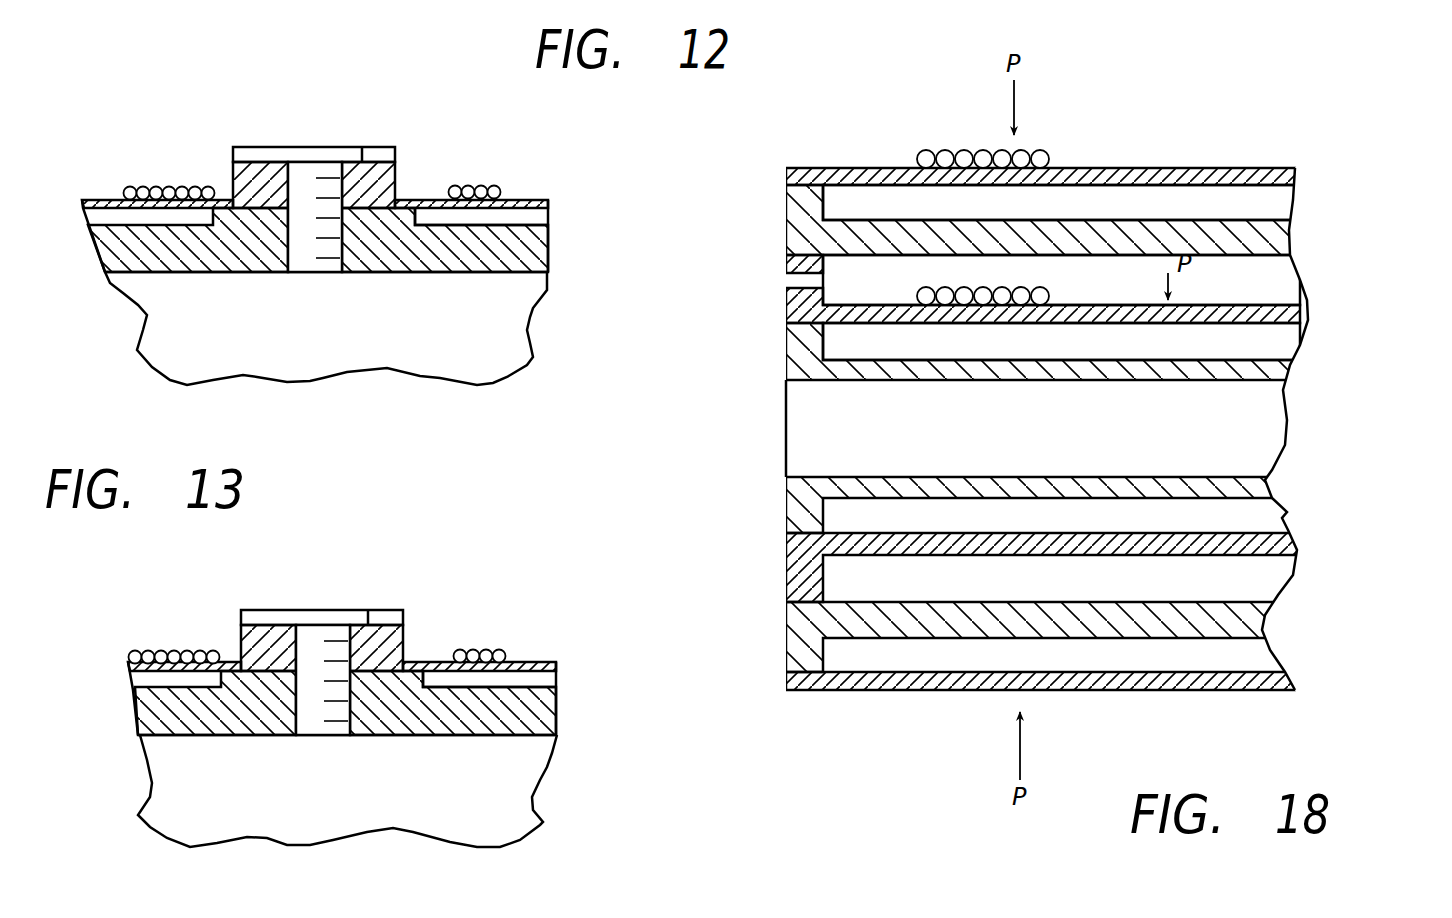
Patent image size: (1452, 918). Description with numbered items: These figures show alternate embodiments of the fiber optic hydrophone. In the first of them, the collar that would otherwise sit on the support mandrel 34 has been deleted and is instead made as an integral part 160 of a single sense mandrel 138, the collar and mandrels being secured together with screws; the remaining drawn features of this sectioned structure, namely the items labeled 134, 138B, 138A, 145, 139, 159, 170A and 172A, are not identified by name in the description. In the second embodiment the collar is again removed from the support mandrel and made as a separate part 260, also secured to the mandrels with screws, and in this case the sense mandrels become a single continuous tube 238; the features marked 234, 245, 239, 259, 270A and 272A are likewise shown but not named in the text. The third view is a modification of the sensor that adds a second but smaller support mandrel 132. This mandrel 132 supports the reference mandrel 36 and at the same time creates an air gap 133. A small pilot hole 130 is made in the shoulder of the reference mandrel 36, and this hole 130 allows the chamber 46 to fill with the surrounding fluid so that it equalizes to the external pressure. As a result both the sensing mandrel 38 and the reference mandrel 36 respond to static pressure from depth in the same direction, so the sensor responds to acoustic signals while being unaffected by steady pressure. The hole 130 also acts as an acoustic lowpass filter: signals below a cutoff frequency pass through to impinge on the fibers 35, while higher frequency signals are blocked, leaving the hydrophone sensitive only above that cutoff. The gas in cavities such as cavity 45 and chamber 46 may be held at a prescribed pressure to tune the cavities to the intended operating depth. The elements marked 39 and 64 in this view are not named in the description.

In FIG. 12, the substrate 134 is at (222, 274).
In FIG. 12, the left electrode layer 138B is at (100, 197).
In FIG. 12, the right electrode lower layer 138A is at (533, 199).
In FIG. 12, the single sense mandrel 138 is at (442, 164).
In FIG. 12, the channel gap 145 is at (460, 220).
In FIG. 12, the microspheres 139 is at (202, 188).
In FIG. 12, the top plate 159 is at (258, 146).
In FIG. 12, the top plate right portion 170A is at (366, 160).
In FIG. 12, the collar part 160 is at (402, 158).
In FIG. 12, the central post 172A is at (290, 182).
In FIG. 13, the substrate 234 is at (230, 737).
In FIG. 13, the single continuous tube 238 is at (555, 660).
In FIG. 13, the channel gap 245 is at (512, 682).
In FIG. 13, the microspheres 239 is at (158, 652).
In FIG. 13, the top plate 259 is at (263, 610).
In FIG. 13, the top plate right portion 270A is at (373, 624).
In FIG. 13, the separate collar part 260 is at (410, 620).
In FIG. 13, the central post 272A is at (297, 646).
In FIG. 18, the sensing mandrel 38 is at (1160, 166).
In FIG. 18, the support mandrel 34 is at (1300, 240).
In FIG. 18, the cavity 45 is at (890, 216).
In FIG. 18, the pilot hole 130 is at (799, 283).
In FIG. 18, the reference mandrel 36 is at (1318, 312).
In FIG. 18, the chamber 46 is at (1232, 288).
In FIG. 18, the fibers 35 is at (1038, 278).
In FIG. 18, the microspheres 39 is at (1047, 142).
In FIG. 18, the air gap 133 is at (1283, 338).
In FIG. 18, the second support mandrel 132 is at (1290, 367).
In FIG. 18, the lower thick layer 64 is at (1280, 615).